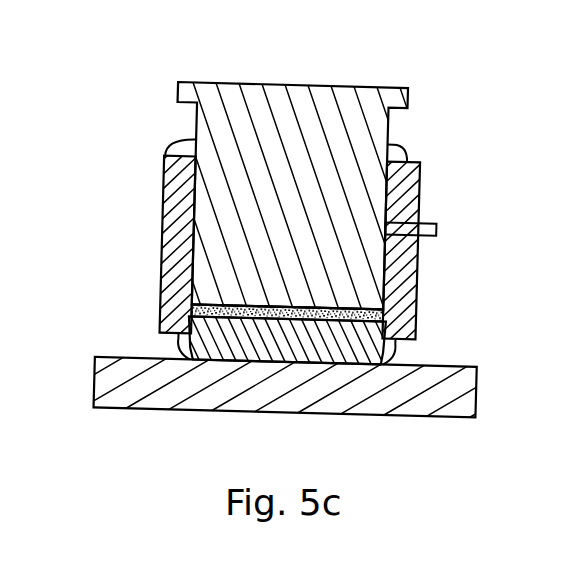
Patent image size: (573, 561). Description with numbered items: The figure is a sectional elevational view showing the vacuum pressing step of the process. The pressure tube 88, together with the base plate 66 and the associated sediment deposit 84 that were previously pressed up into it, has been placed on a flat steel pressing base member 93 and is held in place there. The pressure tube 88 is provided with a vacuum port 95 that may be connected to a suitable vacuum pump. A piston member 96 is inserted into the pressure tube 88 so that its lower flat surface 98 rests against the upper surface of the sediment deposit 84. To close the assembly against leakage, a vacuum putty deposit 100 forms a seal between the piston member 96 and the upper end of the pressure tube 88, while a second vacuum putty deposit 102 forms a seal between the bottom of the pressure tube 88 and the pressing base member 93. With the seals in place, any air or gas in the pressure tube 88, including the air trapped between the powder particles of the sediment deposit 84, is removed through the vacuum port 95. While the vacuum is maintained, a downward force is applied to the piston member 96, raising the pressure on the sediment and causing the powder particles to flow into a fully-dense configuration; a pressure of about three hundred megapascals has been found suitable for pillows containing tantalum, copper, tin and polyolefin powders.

The piston member 96 is at (270, 102).
The vacuum putty deposit 100 is at (186, 143).
The pressure tube 88 is at (176, 258).
The vacuum port 95 is at (416, 222).
The sediment layer 84 is at (335, 306).
The lower flat surface 98 is at (269, 318).
The base plate 66 is at (345, 340).
The second vacuum putty deposit 102 is at (175, 351).
The pressing base member 93 is at (108, 383).